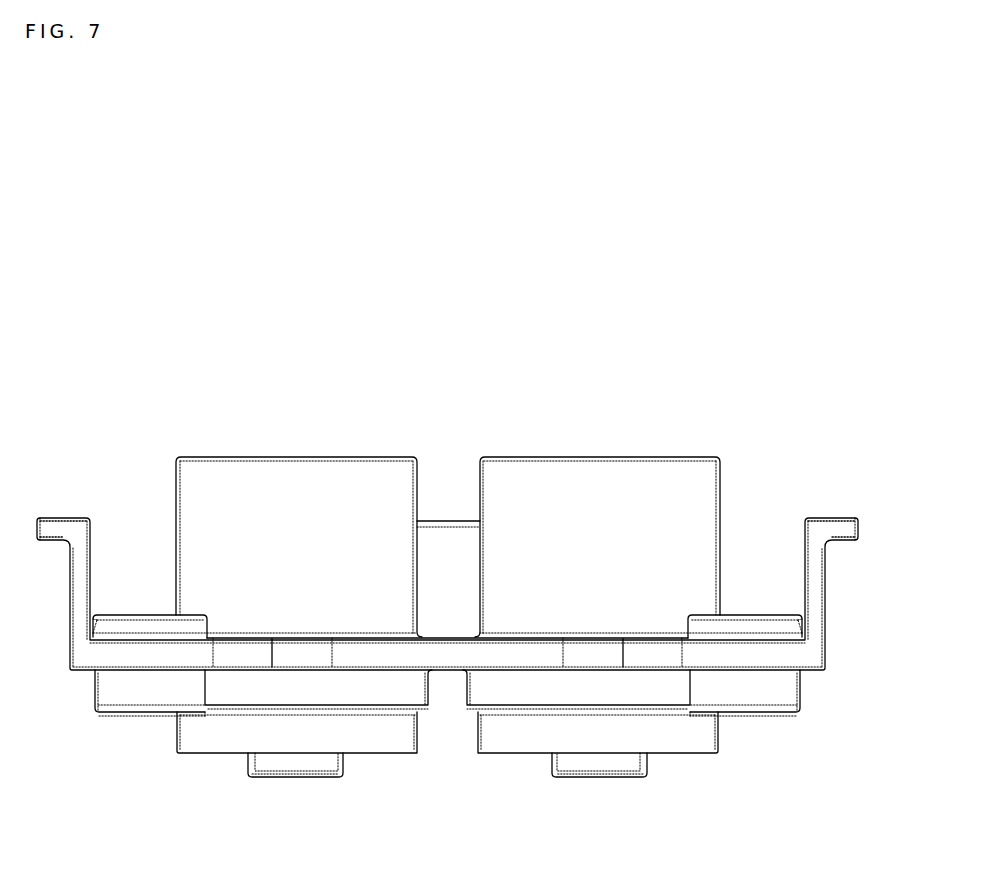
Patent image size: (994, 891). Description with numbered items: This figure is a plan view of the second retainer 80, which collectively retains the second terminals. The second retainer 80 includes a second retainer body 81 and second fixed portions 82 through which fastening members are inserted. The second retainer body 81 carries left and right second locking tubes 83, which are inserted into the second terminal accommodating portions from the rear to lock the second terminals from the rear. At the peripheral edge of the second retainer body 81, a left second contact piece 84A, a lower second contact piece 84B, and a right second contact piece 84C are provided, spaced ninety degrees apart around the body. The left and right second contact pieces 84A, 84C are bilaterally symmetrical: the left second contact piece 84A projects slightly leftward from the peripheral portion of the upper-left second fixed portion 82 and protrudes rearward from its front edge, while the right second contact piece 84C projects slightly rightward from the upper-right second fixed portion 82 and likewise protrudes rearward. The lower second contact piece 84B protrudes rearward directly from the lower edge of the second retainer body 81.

The second retainer 80 is at (442, 254).
The second retainer body 81 is at (446, 653).
The second fixed portion 82 is at (132, 693).
The second locking tube 83 is at (295, 735).
The left second contact piece 84A is at (843, 530).
The lower second contact piece 84B is at (466, 537).
The right second contact piece 84C is at (57, 530).